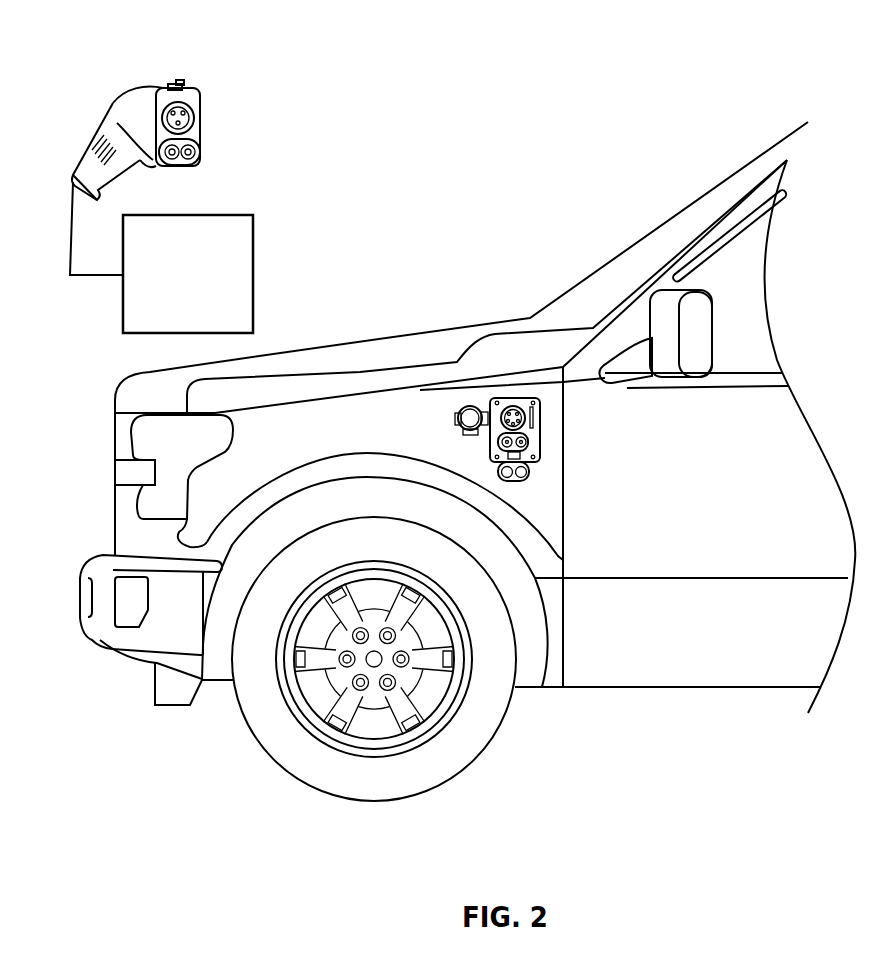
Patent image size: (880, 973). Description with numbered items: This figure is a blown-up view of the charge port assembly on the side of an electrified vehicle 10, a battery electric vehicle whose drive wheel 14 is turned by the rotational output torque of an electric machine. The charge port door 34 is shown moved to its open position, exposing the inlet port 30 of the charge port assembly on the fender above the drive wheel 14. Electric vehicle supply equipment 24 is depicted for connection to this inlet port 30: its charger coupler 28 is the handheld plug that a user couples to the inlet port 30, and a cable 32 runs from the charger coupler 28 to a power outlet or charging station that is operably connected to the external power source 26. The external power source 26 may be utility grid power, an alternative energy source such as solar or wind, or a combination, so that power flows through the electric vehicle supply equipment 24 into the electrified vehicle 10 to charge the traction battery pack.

The electrified vehicle 10 is at (467, 482).
The drive wheel 14 is at (373, 803).
The electric vehicle supply equipment 24 is at (172, 85).
The external power source 26 is at (253, 275).
The charger coupler 28 is at (113, 117).
The inlet port 30 is at (529, 470).
The cable 32 is at (70, 180).
The charge port door 34 is at (462, 434).